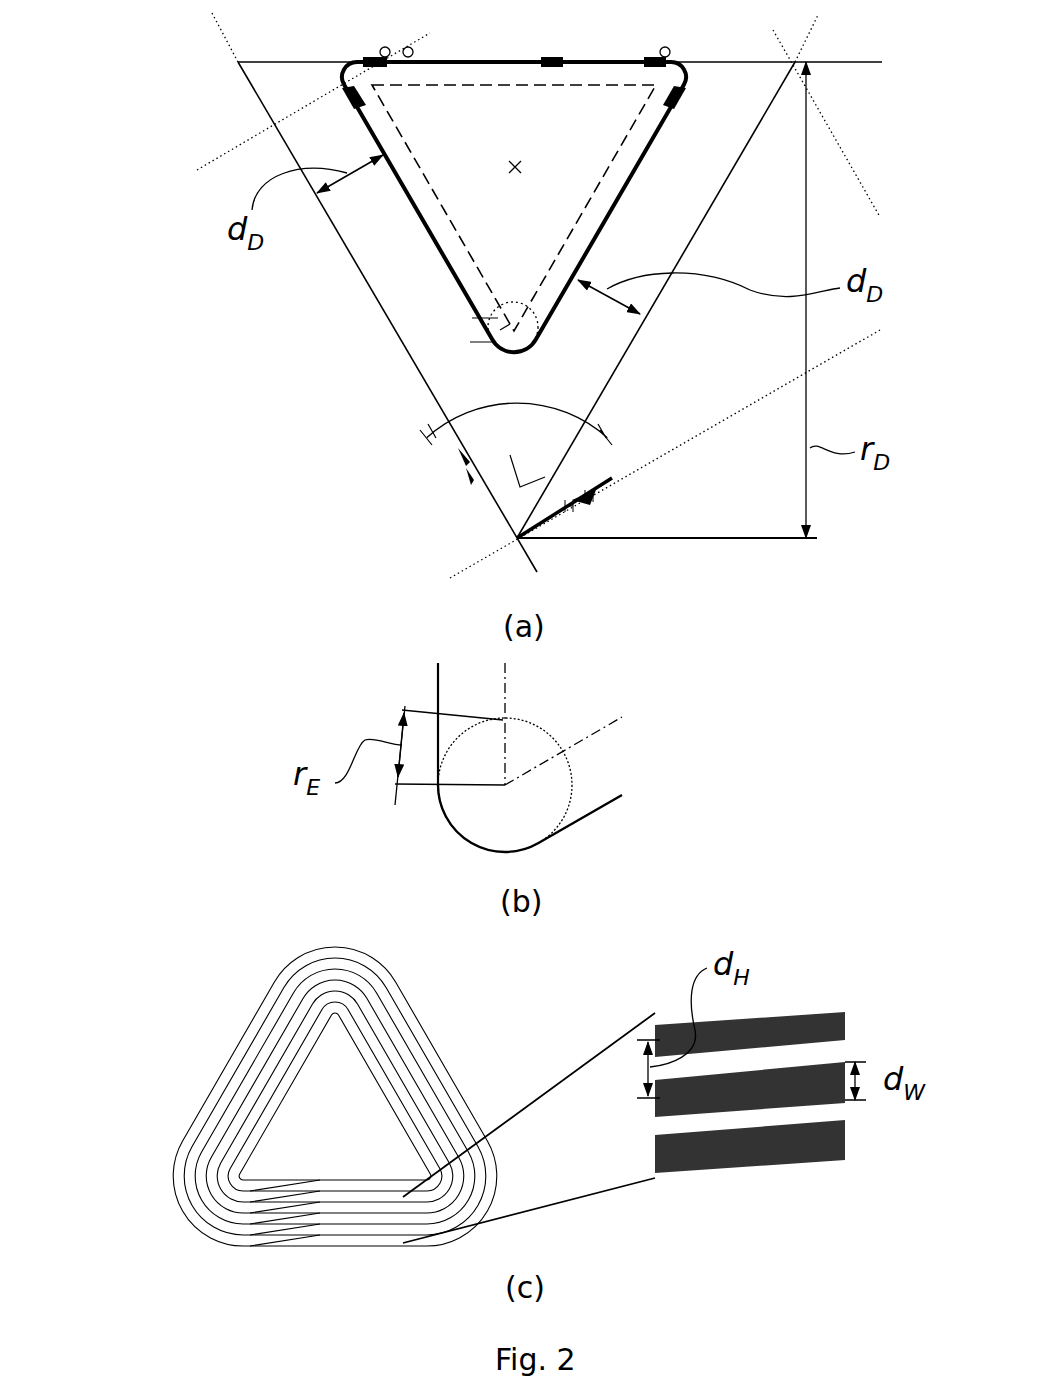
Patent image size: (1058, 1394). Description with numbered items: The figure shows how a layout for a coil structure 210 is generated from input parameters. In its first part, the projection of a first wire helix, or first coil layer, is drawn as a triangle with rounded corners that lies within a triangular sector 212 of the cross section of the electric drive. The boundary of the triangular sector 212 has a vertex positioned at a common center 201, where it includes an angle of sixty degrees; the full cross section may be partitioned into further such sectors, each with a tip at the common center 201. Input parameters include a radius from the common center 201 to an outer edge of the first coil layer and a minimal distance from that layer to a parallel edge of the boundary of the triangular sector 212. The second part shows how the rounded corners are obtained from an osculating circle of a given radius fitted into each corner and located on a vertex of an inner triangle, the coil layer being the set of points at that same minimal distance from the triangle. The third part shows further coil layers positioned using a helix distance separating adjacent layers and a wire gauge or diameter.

The coil structure 210 is at (224, 306).
The triangular sector 212 is at (390, 246).
The common center 201 is at (520, 545).